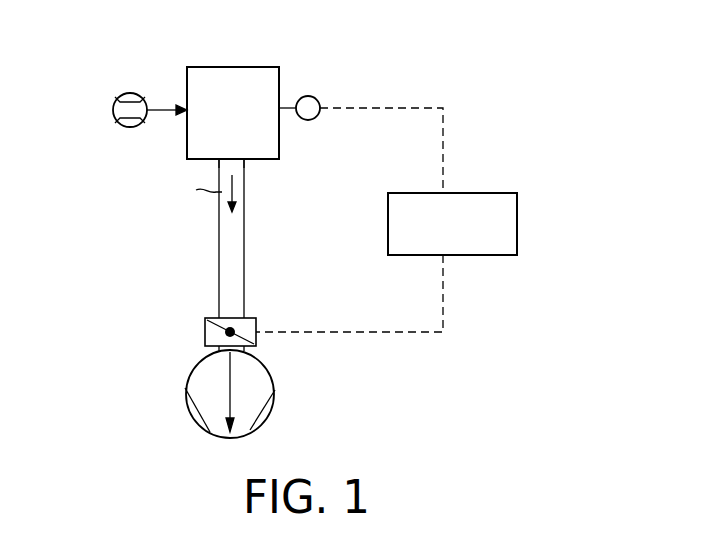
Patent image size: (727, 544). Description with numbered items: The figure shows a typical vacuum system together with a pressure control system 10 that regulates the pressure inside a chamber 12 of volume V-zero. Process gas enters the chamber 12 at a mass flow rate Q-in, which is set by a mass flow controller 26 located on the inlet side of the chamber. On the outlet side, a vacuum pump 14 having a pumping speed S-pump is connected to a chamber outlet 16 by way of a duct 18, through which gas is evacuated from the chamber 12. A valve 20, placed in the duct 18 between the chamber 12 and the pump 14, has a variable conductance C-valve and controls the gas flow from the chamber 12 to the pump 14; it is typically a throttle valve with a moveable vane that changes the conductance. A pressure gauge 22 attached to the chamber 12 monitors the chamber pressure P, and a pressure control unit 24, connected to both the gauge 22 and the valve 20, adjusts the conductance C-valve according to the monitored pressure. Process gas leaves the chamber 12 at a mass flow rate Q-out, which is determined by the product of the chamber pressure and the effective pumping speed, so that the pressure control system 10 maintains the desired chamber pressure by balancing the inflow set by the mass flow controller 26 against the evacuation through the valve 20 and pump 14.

The pressure control system 10 is at (102, 237).
The chamber 12 is at (228, 67).
The vacuum pump 14 is at (263, 423).
The chamber outlet 16 is at (257, 162).
The duct 18 is at (244, 262).
The valve 20 is at (257, 322).
The pressure gauge 22 is at (316, 98).
The pressure control unit 24 is at (517, 221).
The mass flow controller 26 is at (118, 124).